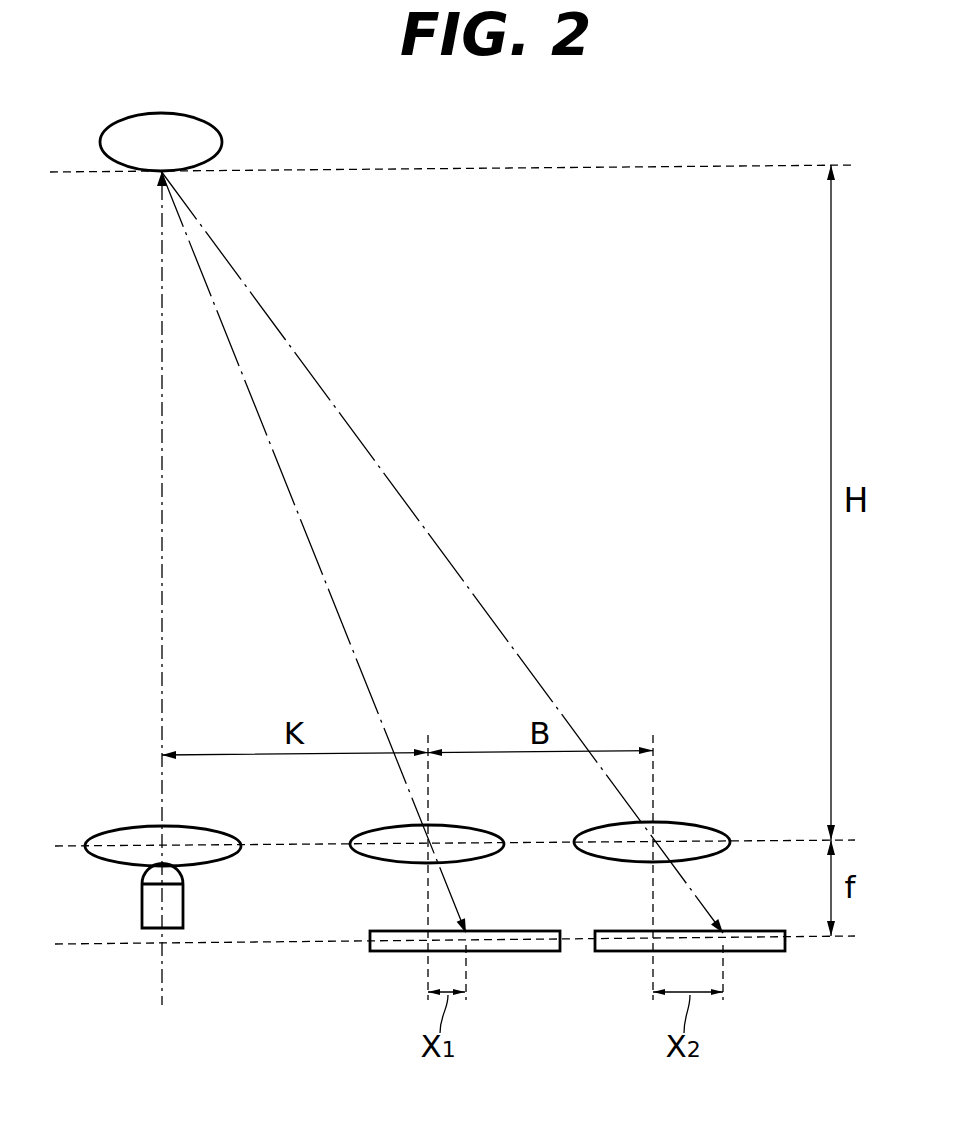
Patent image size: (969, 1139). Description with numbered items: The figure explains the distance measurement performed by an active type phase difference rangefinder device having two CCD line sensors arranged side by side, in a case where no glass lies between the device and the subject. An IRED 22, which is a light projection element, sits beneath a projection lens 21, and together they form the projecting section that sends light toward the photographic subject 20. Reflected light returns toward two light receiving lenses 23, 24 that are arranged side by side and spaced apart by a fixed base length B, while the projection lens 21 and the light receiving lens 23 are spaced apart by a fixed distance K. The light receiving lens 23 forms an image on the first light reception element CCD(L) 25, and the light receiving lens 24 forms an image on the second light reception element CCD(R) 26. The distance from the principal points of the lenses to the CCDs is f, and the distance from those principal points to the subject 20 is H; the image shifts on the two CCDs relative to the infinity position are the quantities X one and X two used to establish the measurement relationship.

The photographic subject 20 is at (180, 113).
The projection lens 21 is at (218, 830).
The IRED 22 is at (186, 893).
The light receiving lens 23 is at (484, 827).
The light receiving lens 24 is at (708, 826).
The first light reception element CCD(L) 25 is at (502, 929).
The second light reception element CCD(R) 26 is at (740, 929).